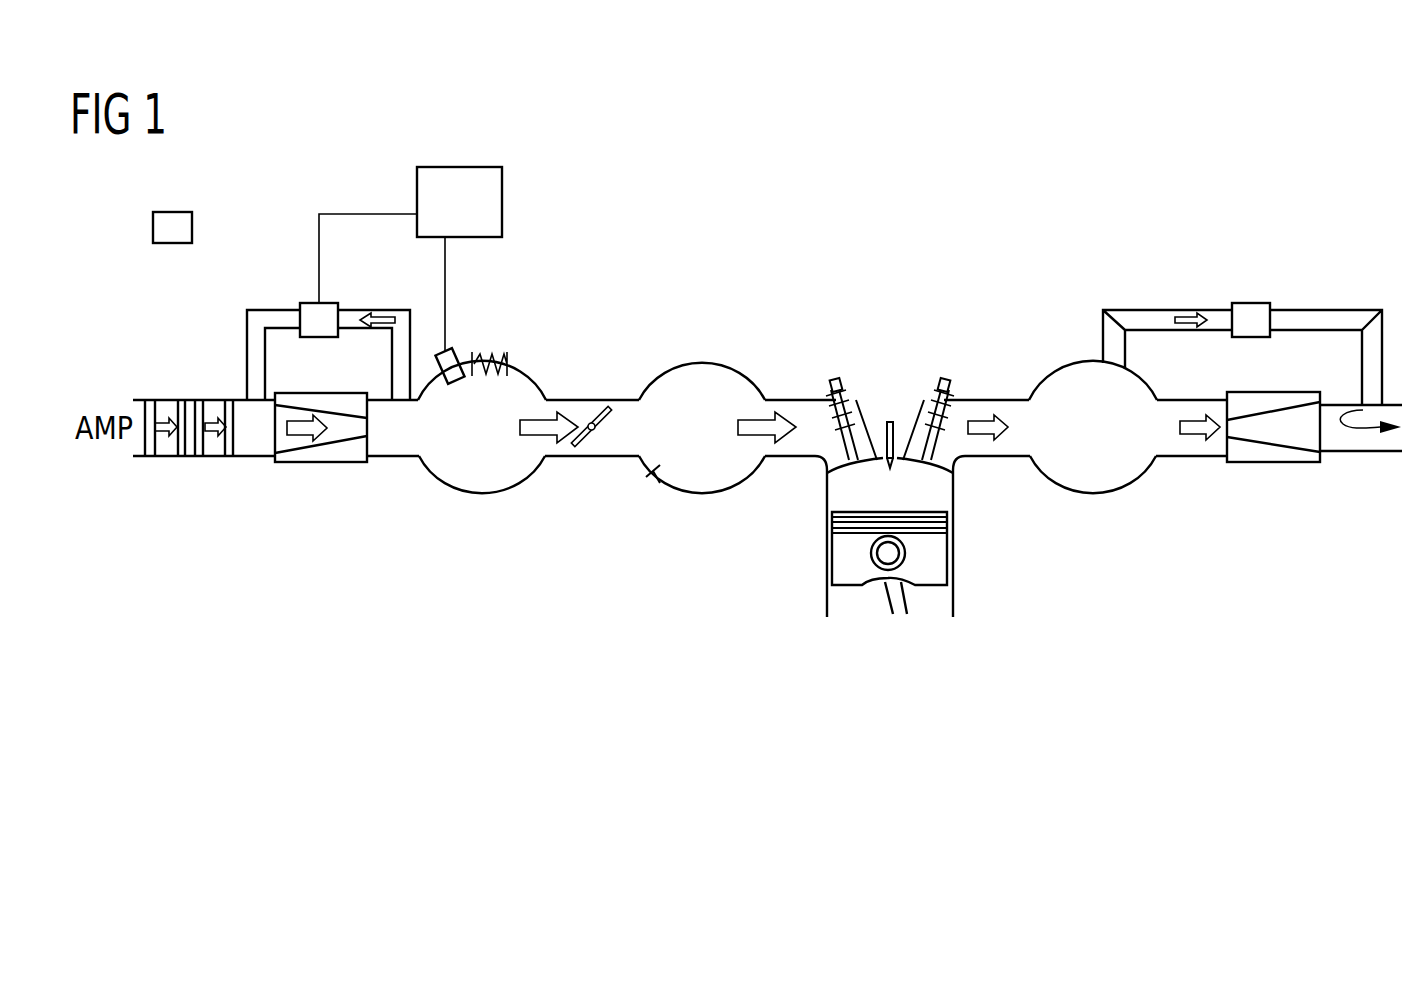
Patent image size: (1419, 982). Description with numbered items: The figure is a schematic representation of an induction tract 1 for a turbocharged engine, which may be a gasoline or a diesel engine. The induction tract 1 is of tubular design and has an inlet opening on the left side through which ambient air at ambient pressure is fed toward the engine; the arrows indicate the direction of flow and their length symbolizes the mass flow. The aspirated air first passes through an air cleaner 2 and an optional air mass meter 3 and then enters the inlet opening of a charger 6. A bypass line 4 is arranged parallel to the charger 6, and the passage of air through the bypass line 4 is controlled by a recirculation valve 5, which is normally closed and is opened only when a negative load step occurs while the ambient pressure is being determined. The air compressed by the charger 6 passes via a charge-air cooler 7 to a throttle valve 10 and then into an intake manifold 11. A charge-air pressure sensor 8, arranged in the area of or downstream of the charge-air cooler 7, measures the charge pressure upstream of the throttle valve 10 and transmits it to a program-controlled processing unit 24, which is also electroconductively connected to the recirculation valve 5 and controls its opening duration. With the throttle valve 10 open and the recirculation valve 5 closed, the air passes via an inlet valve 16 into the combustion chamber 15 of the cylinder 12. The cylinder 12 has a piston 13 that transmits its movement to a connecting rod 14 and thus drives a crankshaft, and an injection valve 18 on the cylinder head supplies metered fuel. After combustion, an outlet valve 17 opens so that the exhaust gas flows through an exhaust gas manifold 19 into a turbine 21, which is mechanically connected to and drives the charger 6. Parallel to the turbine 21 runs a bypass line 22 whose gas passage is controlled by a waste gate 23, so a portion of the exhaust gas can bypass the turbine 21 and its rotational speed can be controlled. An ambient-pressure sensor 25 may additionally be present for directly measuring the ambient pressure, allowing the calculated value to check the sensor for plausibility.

The induction tract 1 is at (893, 297).
The air cleaner 2 is at (157, 400).
The air mass meter 3 is at (215, 400).
The bypass line 4 is at (343, 311).
The recirculation valve 5 is at (312, 303).
The charger 6 is at (323, 463).
The charge-air cooler 7 is at (504, 360).
The charge-air pressure sensor 8 is at (460, 386).
The throttle valve 10 is at (592, 437).
The intake manifold 11 is at (702, 362).
The cylinder 12 is at (814, 591).
The piston 13 is at (937, 556).
The connecting rod 14 is at (893, 614).
The combustion chamber 15 is at (838, 493).
The inlet valve 16 is at (834, 380).
The outlet valve 17 is at (943, 380).
The injection valve 18 is at (890, 422).
The exhaust gas manifold 19 is at (1075, 380).
The turbine 21 is at (1297, 436).
The bypass line 22 is at (1335, 321).
The waste gate 23 is at (1249, 303).
The processing unit 24 is at (466, 167).
The ambient-pressure sensor 25 is at (153, 228).